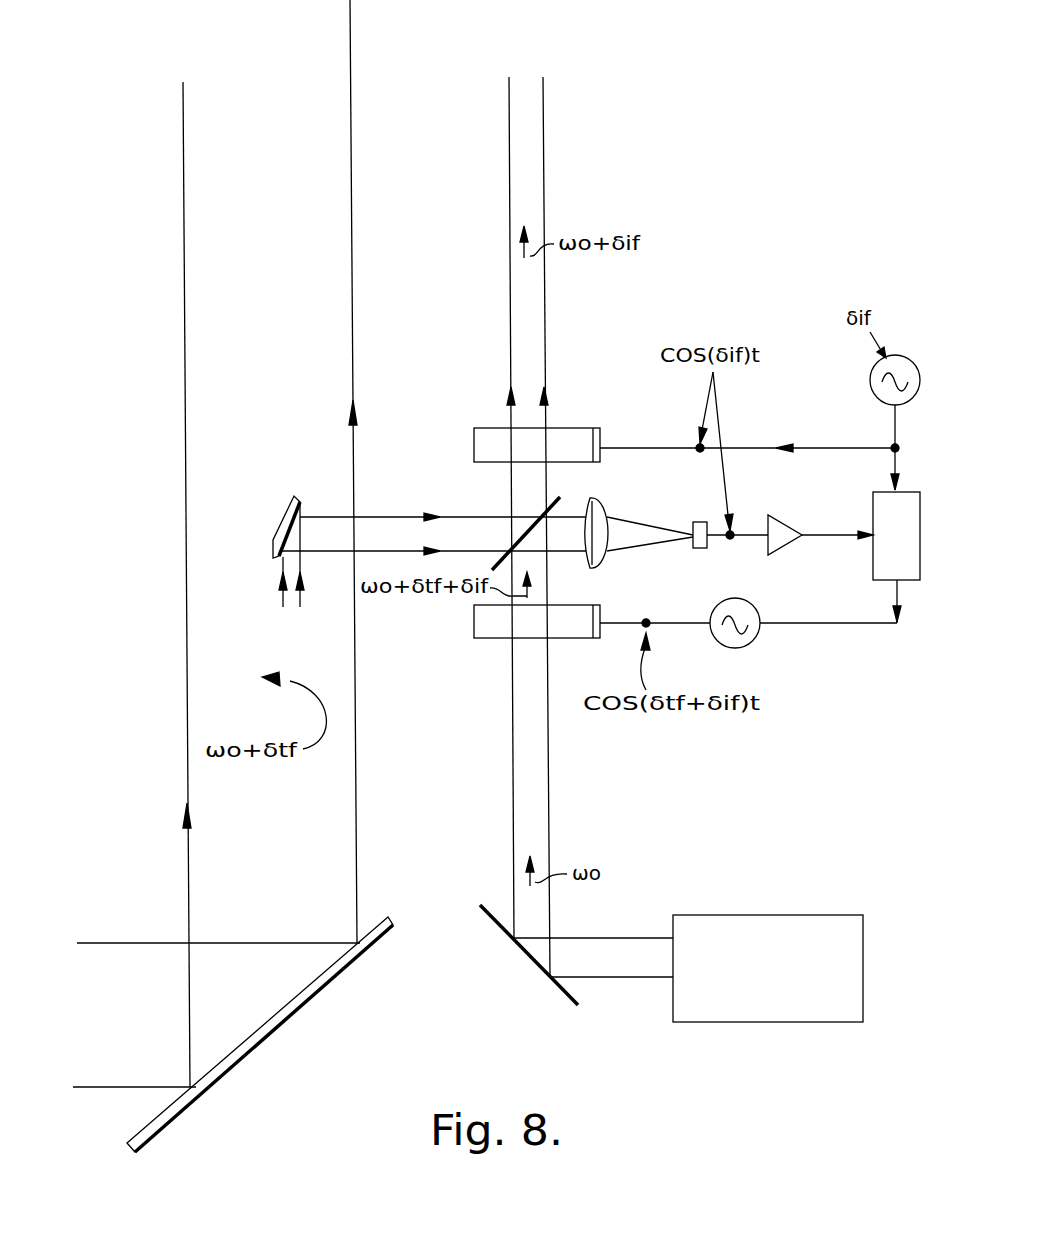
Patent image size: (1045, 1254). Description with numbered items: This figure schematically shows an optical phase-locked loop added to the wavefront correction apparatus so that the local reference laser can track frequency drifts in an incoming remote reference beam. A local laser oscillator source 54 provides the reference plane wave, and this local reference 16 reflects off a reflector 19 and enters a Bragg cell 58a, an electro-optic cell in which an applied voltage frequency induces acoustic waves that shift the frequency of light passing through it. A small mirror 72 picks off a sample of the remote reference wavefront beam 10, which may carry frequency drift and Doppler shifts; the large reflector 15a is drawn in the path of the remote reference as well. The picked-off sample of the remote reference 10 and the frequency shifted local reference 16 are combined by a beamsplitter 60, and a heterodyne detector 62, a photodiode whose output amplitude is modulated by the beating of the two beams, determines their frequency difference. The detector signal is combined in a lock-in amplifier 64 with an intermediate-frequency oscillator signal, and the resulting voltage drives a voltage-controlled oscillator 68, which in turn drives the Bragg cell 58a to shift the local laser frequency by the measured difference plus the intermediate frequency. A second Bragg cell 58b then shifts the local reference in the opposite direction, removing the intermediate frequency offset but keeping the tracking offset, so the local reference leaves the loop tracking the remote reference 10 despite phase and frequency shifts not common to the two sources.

The remote reference wavefront beam 10 is at (186, 606).
The mirror 15a is at (332, 981).
The local reference 16 is at (545, 127).
The reflector 19 is at (566, 992).
The local laser oscillator source 54 is at (674, 915).
The Bragg cell 58a is at (474, 640).
The second Bragg cell 58b is at (475, 429).
The beamsplitter 60 is at (558, 496).
The heterodyne detector 62 is at (770, 556).
The lock-in amplifier 64 is at (873, 580).
The voltage-controlled oscillator 68 is at (753, 644).
The small mirror 72 is at (298, 497).